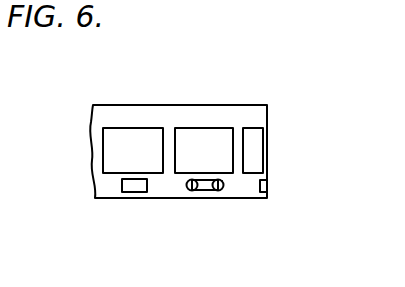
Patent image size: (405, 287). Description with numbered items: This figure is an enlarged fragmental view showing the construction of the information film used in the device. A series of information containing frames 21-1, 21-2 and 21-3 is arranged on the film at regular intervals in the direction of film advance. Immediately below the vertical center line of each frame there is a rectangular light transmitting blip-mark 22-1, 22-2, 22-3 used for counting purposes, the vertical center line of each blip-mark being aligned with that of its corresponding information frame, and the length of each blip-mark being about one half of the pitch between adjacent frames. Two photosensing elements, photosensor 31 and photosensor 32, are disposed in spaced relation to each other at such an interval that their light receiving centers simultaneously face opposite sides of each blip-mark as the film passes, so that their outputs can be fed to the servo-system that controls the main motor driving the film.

The information frame 21-1 is at (263, 143).
The information frame 21-2 is at (212, 128).
The information frame 21-3 is at (132, 128).
The light transmitting blip-mark 22-1 is at (267, 185).
The light transmitting blip-mark 22-2 is at (204, 191).
The light transmitting blip-mark 22-3 is at (127, 192).
The photosensor 31 is at (222, 181).
The photosensor 32 is at (188, 190).